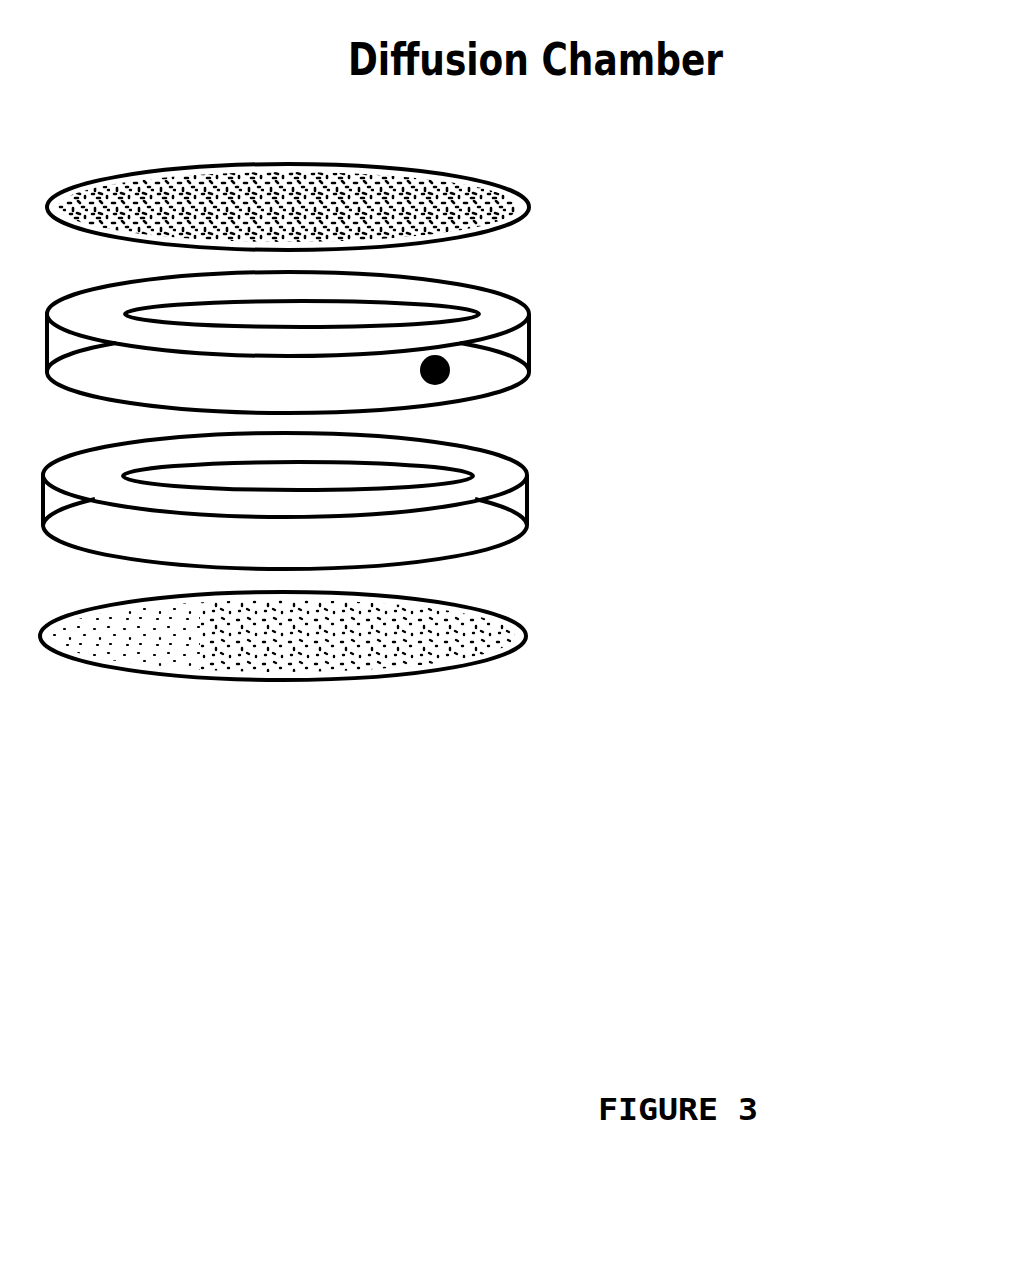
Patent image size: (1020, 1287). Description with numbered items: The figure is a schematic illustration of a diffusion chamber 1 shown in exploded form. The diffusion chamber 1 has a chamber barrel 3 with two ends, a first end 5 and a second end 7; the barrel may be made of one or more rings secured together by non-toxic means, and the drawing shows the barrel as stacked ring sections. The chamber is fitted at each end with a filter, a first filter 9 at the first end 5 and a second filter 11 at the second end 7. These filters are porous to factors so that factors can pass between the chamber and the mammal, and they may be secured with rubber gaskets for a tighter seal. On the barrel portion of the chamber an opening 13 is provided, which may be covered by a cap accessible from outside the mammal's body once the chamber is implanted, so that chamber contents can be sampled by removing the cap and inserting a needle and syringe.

The diffusion chamber 1 is at (470, 418).
The first filter 9 is at (515, 190).
The first end 5 is at (330, 320).
The opening 13 is at (452, 366).
The chamber barrel 3 is at (312, 483).
The second end 7 is at (308, 622).
The second filter 11 is at (439, 675).